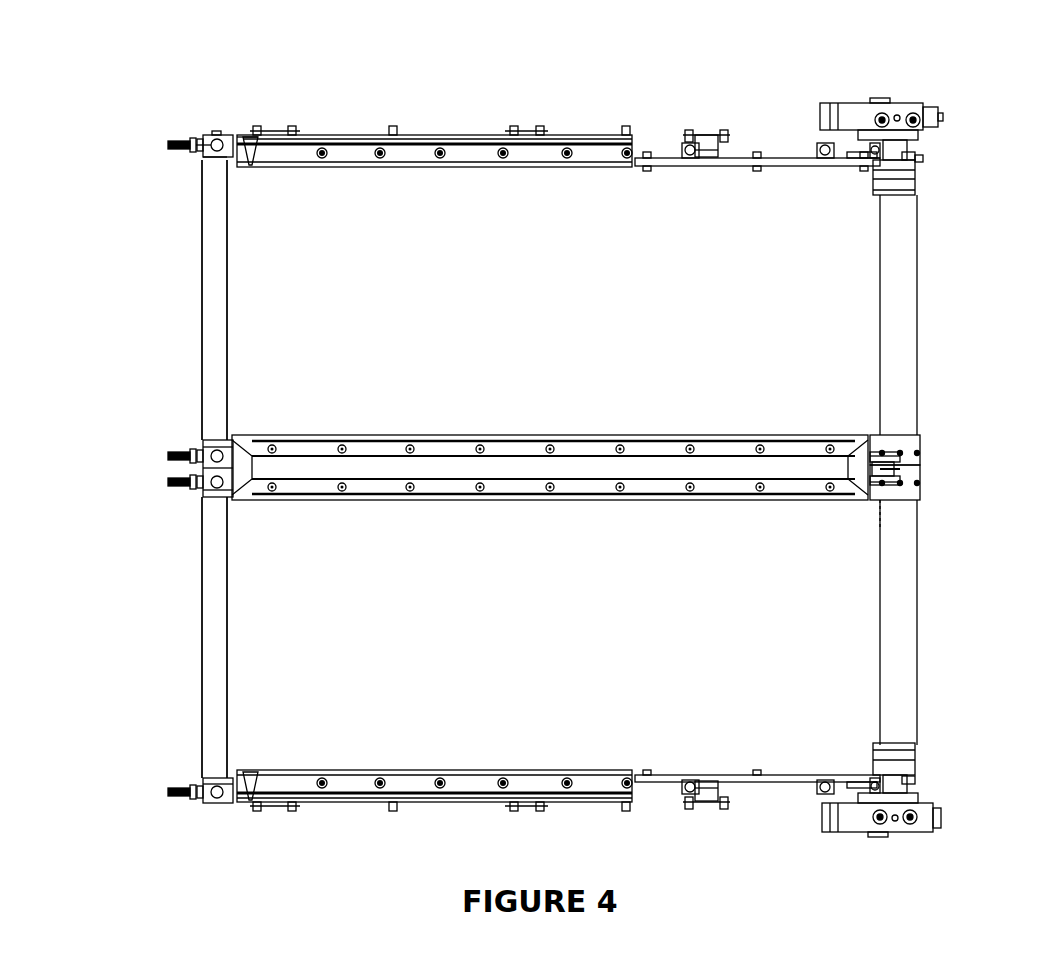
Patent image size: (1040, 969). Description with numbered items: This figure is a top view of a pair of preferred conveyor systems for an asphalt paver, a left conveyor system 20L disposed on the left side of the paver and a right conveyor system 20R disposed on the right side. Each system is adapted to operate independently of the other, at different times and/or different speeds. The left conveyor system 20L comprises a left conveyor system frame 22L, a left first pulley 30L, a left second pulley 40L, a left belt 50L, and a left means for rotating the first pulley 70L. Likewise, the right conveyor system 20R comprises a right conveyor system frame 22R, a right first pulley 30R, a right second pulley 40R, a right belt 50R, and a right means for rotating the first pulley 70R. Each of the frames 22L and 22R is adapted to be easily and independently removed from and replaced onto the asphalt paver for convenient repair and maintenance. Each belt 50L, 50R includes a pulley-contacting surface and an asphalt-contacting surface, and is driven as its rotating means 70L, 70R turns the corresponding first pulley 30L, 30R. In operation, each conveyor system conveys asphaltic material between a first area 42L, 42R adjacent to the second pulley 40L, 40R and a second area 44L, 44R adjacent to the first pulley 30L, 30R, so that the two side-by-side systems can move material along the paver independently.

The right conveyor system 20R is at (297, 110).
The left conveyor system 20L is at (300, 826).
The right conveyor system frame 22R is at (782, 155).
The left conveyor system frame 22L is at (748, 778).
The right first pulley 30R is at (905, 462).
The left first pulley 30L is at (910, 475).
The right second pulley 40R is at (213, 438).
The left second pulley 40L is at (213, 773).
The right first area 42R is at (242, 311).
The left first area 42L is at (242, 654).
The right second area 44R is at (866, 308).
The left second area 44L is at (862, 656).
The right belt 50R is at (258, 216).
The left belt 50L is at (258, 580).
The right means for rotating the first pulley 70R is at (915, 95).
The left means for rotating the first pulley 70L is at (905, 845).